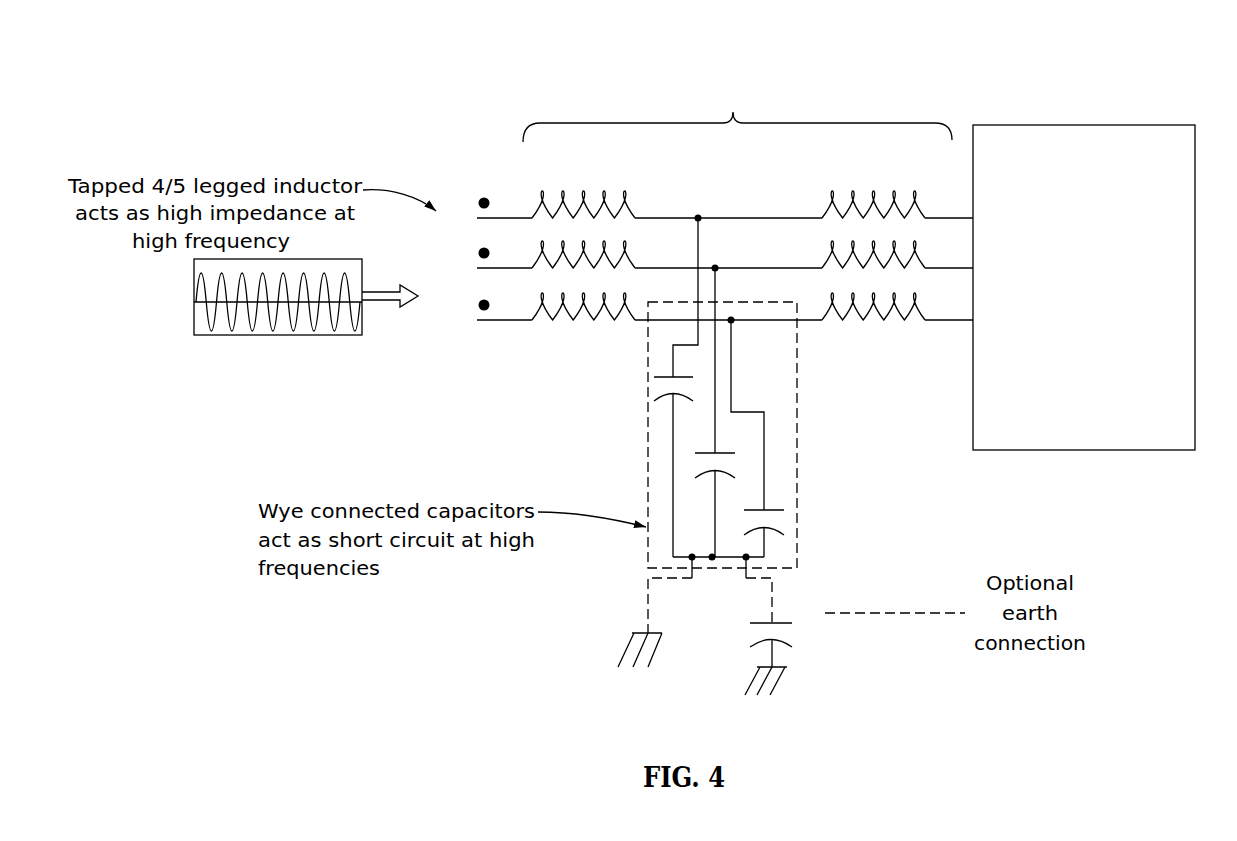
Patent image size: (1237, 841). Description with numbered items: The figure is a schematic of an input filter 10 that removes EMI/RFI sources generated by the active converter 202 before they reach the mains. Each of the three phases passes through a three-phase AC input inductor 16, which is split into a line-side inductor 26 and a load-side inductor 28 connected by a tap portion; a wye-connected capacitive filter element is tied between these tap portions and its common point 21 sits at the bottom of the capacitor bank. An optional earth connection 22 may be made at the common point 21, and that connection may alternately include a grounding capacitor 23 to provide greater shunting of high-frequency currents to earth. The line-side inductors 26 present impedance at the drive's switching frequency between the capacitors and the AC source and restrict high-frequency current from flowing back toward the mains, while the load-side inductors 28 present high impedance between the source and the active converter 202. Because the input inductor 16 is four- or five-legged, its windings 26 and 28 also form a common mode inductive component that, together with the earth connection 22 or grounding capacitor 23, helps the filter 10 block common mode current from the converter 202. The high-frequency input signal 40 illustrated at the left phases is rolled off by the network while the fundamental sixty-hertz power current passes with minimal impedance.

The input filter 10 is at (427, 96).
The three-phase AC input inductor 16 is at (737, 257).
The line-side inductor 26 is at (560, 338).
The load-side inductor 28 is at (872, 177).
The high frequency input signal 40 is at (295, 340).
The active converter 202 is at (1076, 124).
The common point 21 is at (716, 562).
The optional earth connection 22 is at (808, 672).
The grounding capacitor 23 is at (770, 508).